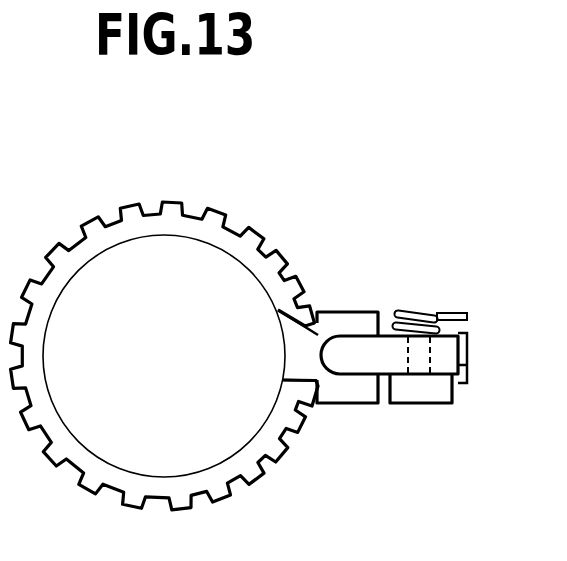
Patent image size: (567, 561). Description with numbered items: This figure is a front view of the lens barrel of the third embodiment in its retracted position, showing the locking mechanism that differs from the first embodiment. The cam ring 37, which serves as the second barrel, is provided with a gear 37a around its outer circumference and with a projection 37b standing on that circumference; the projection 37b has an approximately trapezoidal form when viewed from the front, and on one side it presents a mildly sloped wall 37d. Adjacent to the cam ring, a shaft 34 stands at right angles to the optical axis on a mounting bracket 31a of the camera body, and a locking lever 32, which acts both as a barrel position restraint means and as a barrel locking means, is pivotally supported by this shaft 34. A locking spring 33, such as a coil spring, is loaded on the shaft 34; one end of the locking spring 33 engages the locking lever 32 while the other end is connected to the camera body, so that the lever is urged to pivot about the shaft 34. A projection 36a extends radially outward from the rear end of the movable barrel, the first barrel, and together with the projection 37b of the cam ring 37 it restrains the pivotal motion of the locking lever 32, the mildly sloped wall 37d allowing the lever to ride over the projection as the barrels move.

The cam ring 37 is at (192, 257).
The gear 37a is at (132, 203).
The mildly sloped wall 37d is at (283, 310).
The projection 37b is at (313, 370).
The projection 36a is at (370, 311).
The locking lever 32 is at (450, 355).
The mounting bracket 31a is at (429, 404).
The locking spring 33 is at (398, 311).
The shaft 34 is at (433, 311).